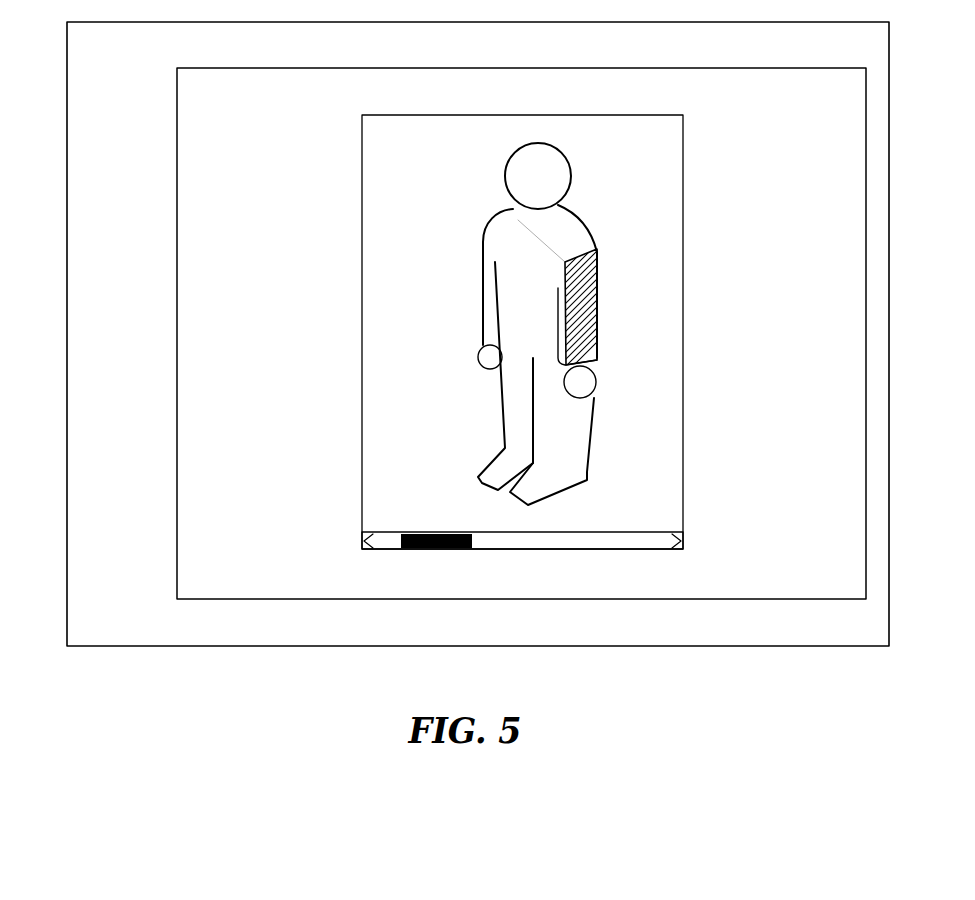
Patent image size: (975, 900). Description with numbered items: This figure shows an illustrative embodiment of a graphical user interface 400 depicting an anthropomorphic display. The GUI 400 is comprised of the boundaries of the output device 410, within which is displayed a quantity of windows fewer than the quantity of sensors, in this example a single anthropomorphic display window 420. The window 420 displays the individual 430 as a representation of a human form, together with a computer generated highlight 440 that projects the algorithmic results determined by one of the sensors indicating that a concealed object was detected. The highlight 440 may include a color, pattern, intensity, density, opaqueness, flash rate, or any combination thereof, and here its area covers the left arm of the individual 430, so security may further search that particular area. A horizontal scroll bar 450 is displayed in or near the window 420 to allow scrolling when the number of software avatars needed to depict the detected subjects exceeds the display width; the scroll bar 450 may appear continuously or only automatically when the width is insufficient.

The graphical user interface 400 is at (67, 138).
The output device 410 is at (177, 100).
The anthropomorphic display window 420 is at (362, 177).
The individual 430 is at (553, 144).
The computer generated highlight 440 is at (593, 310).
The horizontal scroll bar 450 is at (362, 541).